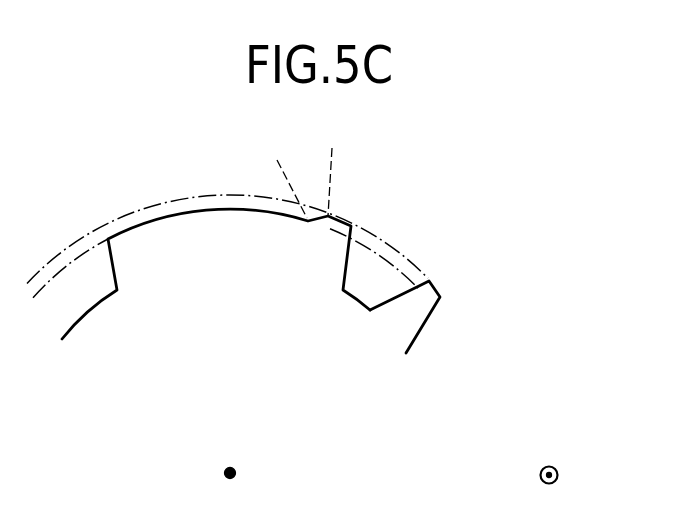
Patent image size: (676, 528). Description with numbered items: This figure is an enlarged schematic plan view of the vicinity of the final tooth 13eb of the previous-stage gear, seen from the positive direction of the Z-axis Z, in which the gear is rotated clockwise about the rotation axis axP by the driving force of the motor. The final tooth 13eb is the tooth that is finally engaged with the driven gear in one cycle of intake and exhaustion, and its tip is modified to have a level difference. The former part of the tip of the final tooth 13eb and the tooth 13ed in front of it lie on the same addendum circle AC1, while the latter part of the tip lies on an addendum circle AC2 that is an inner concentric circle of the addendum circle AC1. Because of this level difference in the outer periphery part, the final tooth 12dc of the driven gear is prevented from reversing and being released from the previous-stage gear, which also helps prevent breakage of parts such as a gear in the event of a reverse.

The final tooth 13eb is at (173, 214).
The tooth in front of the final tooth 13ed is at (437, 307).
The final tooth of the driven gear 12dc is at (332, 163).
The addendum circle AC1 is at (417, 267).
The addendum circle AC2 is at (383, 258).
The rotation axis axP is at (227, 464).
The Z-axis Z is at (559, 475).